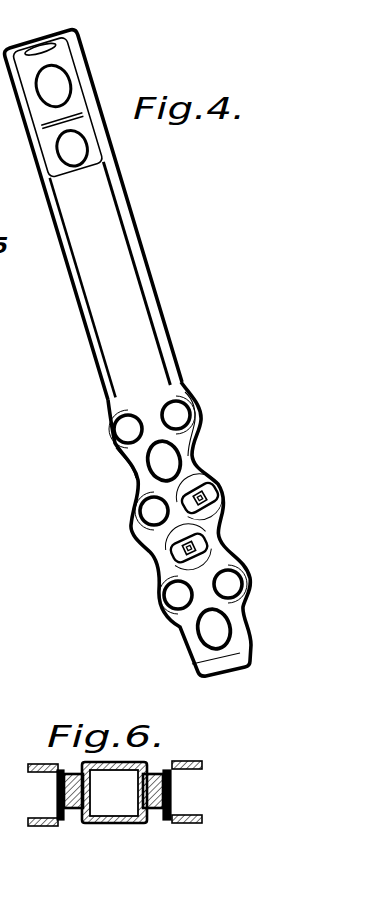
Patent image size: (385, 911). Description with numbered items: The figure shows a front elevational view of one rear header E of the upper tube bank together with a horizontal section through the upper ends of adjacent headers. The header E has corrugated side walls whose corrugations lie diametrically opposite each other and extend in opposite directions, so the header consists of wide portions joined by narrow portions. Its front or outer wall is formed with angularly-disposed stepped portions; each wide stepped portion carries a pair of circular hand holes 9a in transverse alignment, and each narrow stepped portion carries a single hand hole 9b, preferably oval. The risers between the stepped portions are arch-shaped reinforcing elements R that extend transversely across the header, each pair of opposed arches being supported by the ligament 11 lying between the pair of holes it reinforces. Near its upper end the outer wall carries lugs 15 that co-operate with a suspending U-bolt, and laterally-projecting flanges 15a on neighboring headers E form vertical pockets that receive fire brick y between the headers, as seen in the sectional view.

In FIG. 4, the rear header E is at (147, 261).
In FIG. 6, the rear header E is at (105, 822).
In FIG. 4, the lugs 15 is at (48, 120).
In FIG. 4, the laterally-projecting flanges 15a is at (163, 327).
In FIG. 6, the laterally-projecting flanges 15a is at (76, 812).
In FIG. 4, the ligament 11 is at (172, 417).
In FIG. 4, the circular hand holes 9a is at (137, 638).
In FIG. 4, the single hand hole 9b is at (214, 553).
In FIG. 4, the reinforcing element R is at (197, 458).
In FIG. 6, the fire brick y is at (172, 770).